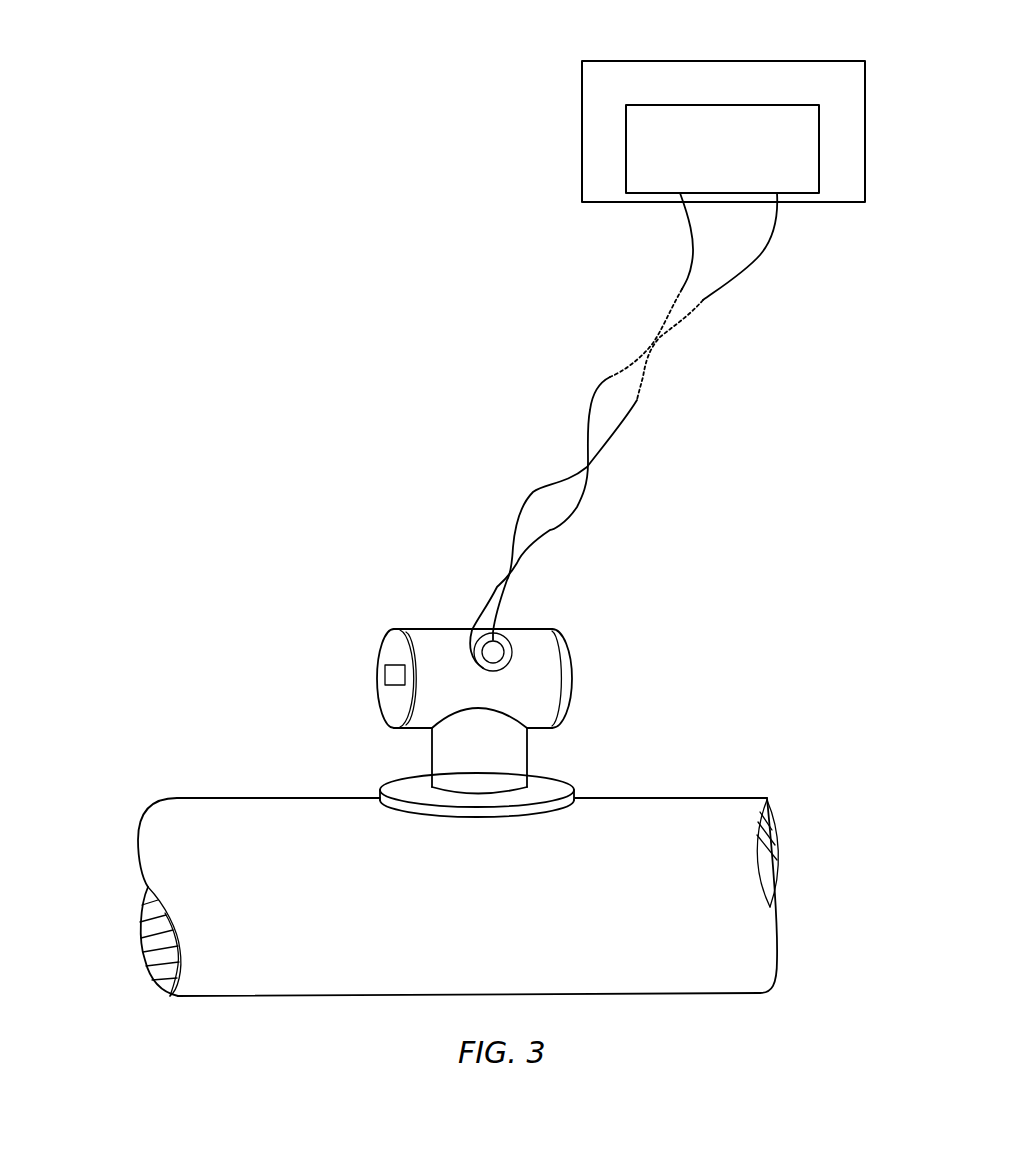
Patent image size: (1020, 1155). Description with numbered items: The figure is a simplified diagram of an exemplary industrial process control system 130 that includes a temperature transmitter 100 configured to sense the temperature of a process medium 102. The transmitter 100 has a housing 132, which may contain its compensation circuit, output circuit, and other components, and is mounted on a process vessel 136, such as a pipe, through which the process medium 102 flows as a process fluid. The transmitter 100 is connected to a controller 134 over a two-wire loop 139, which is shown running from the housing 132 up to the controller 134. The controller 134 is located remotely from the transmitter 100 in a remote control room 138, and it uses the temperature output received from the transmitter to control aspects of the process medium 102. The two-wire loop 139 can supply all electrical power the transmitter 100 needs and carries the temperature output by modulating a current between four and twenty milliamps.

The temperature transmitter 100 is at (524, 690).
The process medium 102 is at (147, 917).
The industrial process control system 130 is at (247, 310).
The housing 132 is at (427, 633).
The controller 134 is at (627, 138).
The process vessel 136 is at (663, 830).
The remote control room 138 is at (617, 60).
The two-wire loop 139 is at (577, 507).